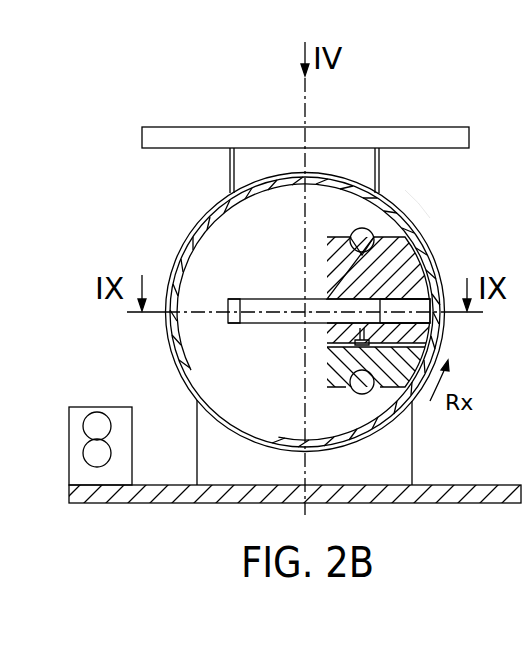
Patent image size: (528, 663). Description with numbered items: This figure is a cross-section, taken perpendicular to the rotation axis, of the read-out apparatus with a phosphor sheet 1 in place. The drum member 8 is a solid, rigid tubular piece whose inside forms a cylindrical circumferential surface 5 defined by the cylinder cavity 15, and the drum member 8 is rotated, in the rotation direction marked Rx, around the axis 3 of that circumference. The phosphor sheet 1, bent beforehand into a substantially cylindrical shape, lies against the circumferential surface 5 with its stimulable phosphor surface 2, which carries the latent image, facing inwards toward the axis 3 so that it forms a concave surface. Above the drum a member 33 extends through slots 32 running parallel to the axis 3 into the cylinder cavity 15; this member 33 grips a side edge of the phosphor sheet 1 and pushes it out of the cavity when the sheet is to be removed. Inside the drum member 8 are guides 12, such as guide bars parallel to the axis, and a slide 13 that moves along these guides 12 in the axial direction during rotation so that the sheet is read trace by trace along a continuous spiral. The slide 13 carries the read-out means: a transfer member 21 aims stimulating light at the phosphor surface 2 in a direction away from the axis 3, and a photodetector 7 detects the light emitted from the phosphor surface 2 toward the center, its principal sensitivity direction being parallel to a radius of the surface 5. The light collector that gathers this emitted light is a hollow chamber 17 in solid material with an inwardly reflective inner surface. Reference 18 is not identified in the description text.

The phosphor sheet 1 is at (195, 234).
The stimulable phosphor surface 2 is at (186, 347).
The axis 3 is at (302, 318).
The cylindrical circumferential surface 5 is at (229, 413).
The photodetector 7 is at (314, 297).
The drum member 8 is at (420, 203).
The guides 12 is at (370, 229).
The slide 13 is at (398, 252).
The cylinder cavity 15 is at (278, 244).
The hollow chamber 17 is at (410, 302).
The shaft end 18 is at (249, 308).
The transfer member 21 is at (331, 208).
The slots 32 is at (233, 193).
The member 33 is at (214, 136).